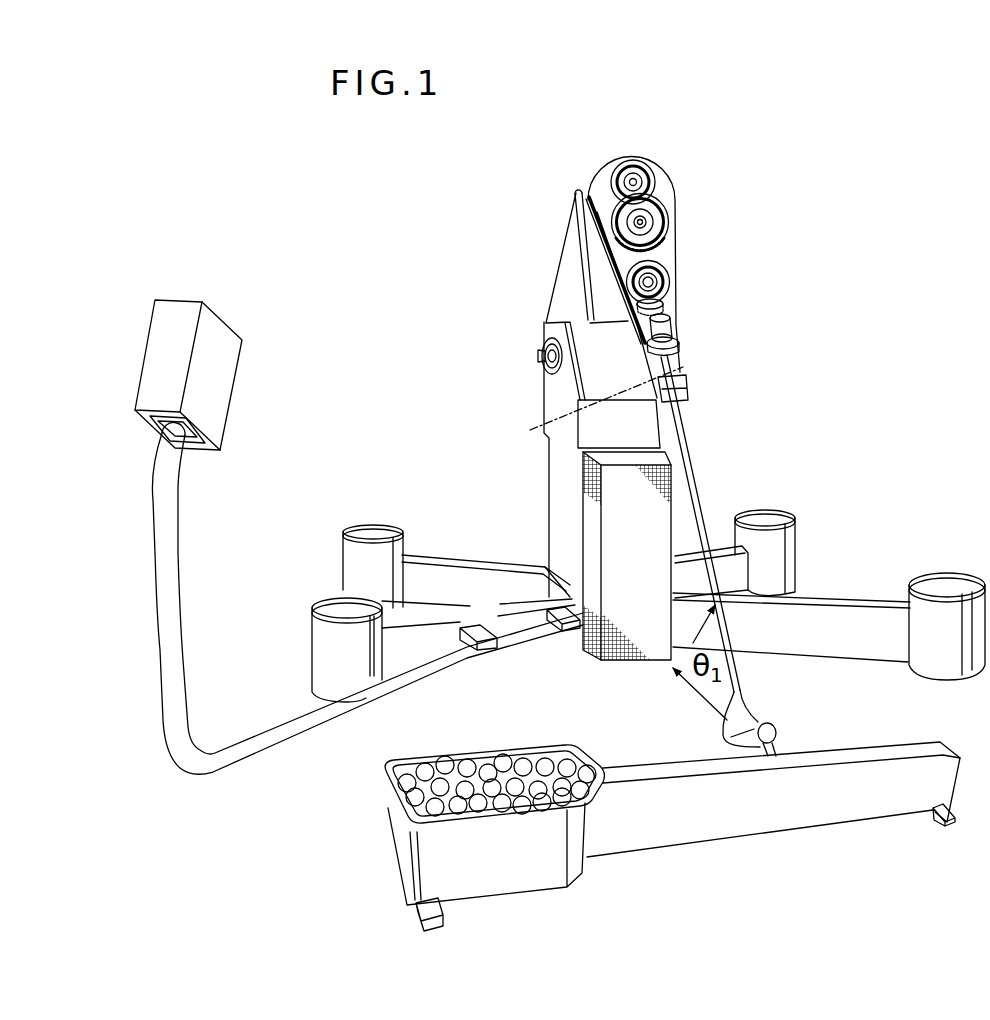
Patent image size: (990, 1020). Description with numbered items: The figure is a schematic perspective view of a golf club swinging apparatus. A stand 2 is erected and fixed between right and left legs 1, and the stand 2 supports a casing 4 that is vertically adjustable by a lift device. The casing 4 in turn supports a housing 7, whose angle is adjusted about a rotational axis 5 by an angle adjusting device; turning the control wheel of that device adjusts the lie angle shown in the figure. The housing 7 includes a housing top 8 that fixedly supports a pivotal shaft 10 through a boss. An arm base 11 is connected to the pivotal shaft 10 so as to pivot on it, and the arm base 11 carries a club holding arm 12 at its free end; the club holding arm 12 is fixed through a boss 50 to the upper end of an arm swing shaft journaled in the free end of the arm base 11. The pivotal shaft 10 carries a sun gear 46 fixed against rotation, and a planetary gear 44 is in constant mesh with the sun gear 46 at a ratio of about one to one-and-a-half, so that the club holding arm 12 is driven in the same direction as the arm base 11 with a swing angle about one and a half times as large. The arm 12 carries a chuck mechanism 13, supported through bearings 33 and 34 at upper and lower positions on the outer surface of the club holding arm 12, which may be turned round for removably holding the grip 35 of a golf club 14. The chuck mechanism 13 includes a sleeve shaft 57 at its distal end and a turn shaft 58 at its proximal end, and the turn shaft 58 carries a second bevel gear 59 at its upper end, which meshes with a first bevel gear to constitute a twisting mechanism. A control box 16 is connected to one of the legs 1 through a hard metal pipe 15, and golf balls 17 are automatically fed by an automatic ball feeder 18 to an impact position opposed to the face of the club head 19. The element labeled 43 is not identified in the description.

The legs 1 is at (458, 580).
The stand 2 is at (557, 496).
The casing 4 is at (555, 408).
The rotational axis 5 is at (537, 356).
The housing 7 is at (568, 274).
The housing top 8 is at (593, 247).
The pivotal shaft 10 is at (633, 182).
The arm base 11 is at (675, 195).
The club holding arm 12 is at (667, 291).
The chuck mechanism 13 is at (700, 393).
The golf club 14 is at (692, 443).
The hard metal pipe 15 is at (413, 677).
The control box 16 is at (227, 375).
The golf balls 17 is at (488, 772).
The automatic ball feeder 18 is at (728, 830).
The club head 19 is at (725, 732).
The bearing 33 is at (675, 302).
The bearing 34 is at (680, 347).
The grip 35 is at (662, 417).
The pulley hub 43 is at (650, 218).
The planetary gear 44 is at (668, 244).
The sun gear 46 is at (618, 178).
The boss 50 is at (672, 277).
The sleeve shaft 57 is at (591, 410).
The turn shaft 58 is at (672, 323).
The second bevel gear 59 is at (627, 307).